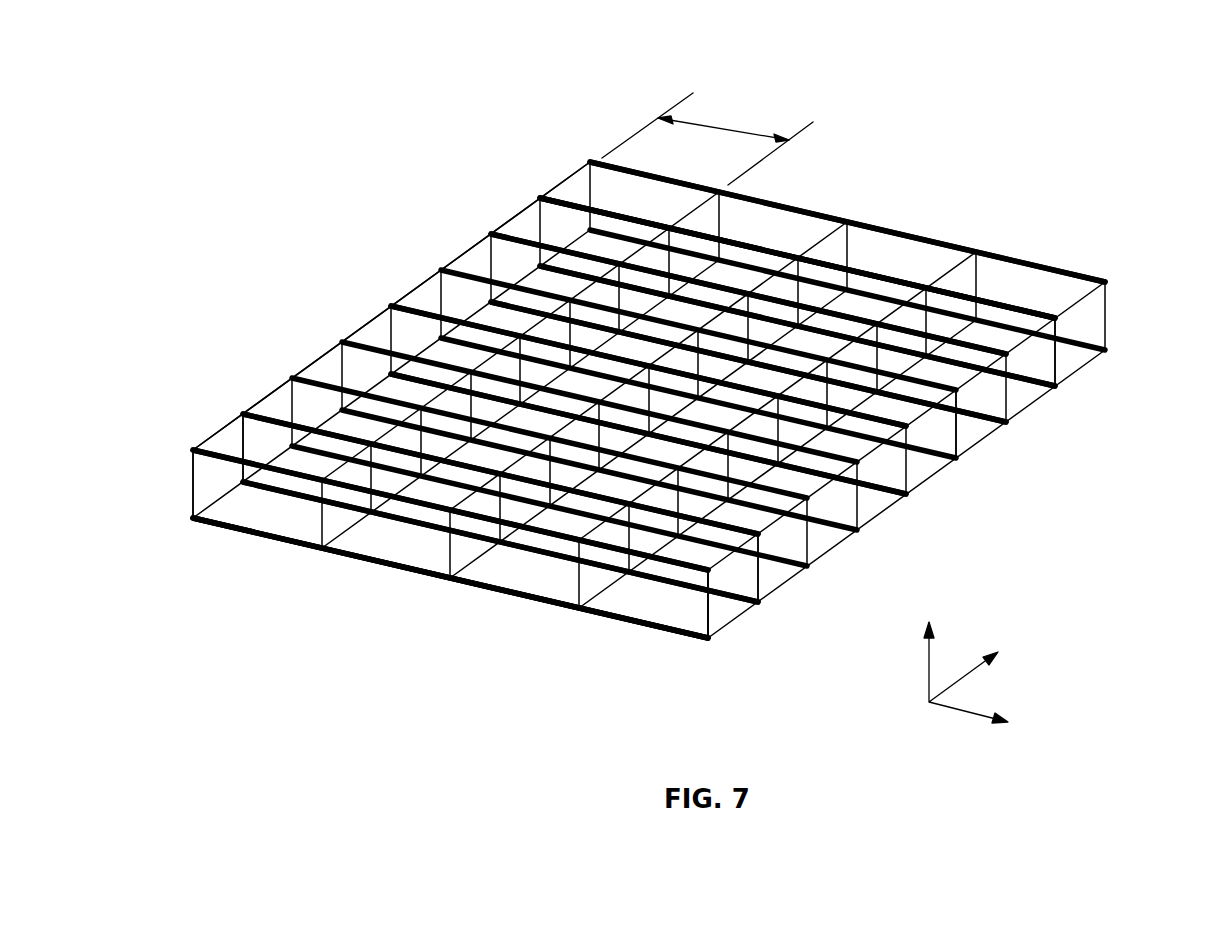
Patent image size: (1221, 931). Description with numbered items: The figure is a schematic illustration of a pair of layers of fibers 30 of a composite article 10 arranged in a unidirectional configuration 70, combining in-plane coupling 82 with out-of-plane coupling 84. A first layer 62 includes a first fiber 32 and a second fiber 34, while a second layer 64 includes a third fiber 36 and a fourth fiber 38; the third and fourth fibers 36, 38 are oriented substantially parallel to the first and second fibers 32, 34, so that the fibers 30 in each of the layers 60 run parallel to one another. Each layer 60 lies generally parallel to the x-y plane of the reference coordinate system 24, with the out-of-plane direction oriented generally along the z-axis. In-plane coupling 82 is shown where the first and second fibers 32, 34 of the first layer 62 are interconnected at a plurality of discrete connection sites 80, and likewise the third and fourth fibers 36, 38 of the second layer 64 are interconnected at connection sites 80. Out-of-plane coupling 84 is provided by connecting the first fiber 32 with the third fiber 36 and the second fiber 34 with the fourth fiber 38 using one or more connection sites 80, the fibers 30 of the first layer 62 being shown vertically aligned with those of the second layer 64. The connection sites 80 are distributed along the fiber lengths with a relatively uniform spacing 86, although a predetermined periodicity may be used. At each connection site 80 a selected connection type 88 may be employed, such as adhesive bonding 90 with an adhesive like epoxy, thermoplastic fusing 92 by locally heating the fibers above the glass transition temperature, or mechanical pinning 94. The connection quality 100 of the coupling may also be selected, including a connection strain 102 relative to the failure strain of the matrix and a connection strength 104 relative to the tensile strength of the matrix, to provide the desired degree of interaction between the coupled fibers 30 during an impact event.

The composite article 10 is at (1012, 146).
The reference coordinate system 24 is at (942, 705).
The fibers 30 is at (870, 227).
The first fiber 32 is at (207, 445).
The second fiber 34 is at (288, 418).
The third fiber 36 is at (232, 530).
The fourth fiber 38 is at (297, 495).
The layers 60 is at (723, 573).
The first layer 62 is at (193, 449).
The second layer 64 is at (193, 516).
The unidirectional configuration 70 is at (760, 603).
The connection sites 80 is at (1105, 283).
The in-plane coupling 82 is at (233, 418).
The out-of-plane coupling 84 is at (193, 482).
The spacing 86 is at (727, 122).
The connection type 88 is at (1057, 390).
The adhesive bonding 90 is at (957, 460).
The thermoplastic fusing 92 is at (978, 257).
The mechanical pinning 94 is at (988, 310).
The connection quality 100 is at (492, 235).
The connection strain 102 is at (542, 198).
The connection strength 104 is at (393, 305).